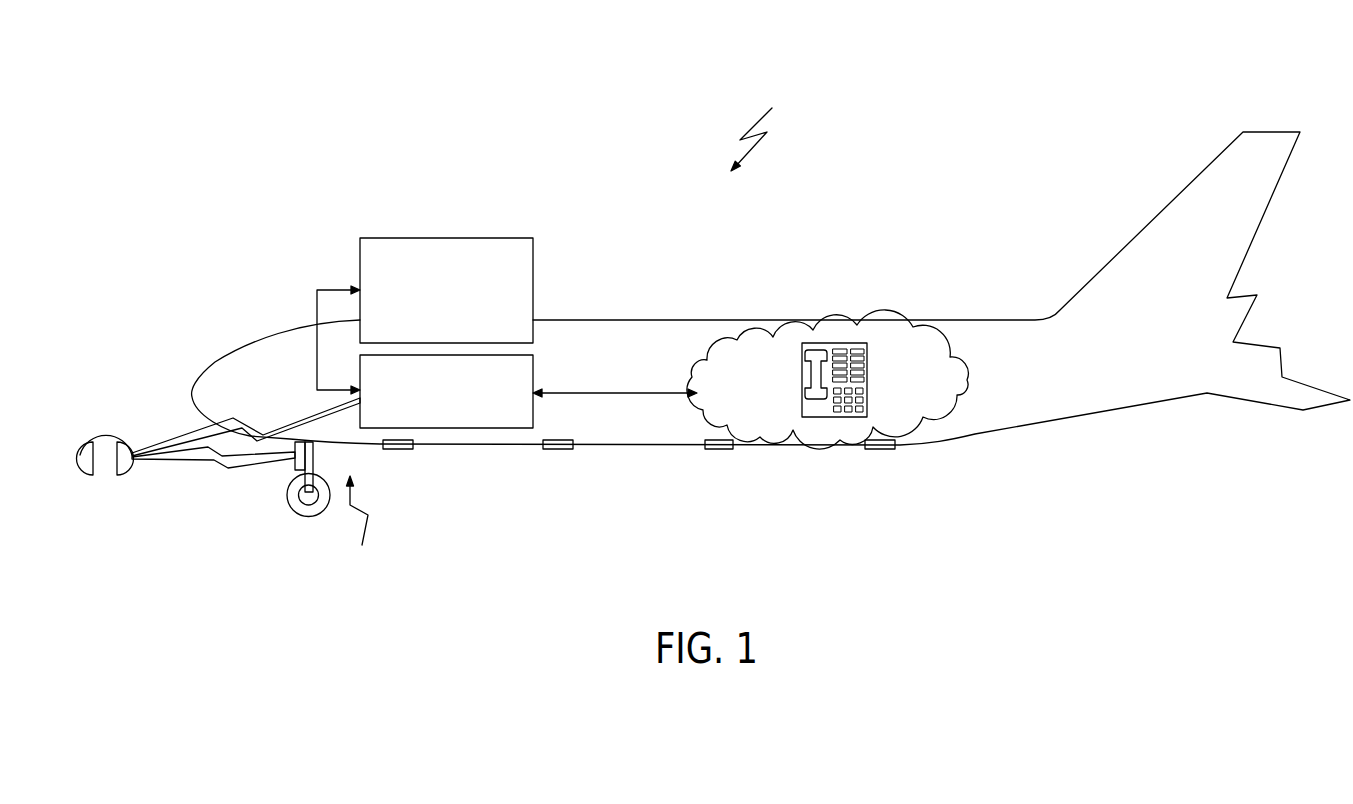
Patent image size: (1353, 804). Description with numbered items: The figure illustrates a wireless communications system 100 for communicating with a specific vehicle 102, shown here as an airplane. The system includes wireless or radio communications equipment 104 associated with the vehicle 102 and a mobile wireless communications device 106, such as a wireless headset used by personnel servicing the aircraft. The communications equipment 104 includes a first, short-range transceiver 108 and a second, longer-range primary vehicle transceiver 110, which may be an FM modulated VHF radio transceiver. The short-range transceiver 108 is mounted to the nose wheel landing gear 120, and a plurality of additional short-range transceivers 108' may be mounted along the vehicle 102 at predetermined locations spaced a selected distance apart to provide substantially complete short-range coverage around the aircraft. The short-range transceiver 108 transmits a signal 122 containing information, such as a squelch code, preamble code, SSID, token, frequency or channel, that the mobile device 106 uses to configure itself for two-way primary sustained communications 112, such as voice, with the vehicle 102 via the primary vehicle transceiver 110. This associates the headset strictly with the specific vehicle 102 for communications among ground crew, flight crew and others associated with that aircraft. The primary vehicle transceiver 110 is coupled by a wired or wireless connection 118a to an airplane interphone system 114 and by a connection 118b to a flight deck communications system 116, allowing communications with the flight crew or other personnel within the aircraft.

The wireless communications system 100 is at (767, 127).
The vehicle 102 is at (783, 320).
The communications equipment 104 is at (363, 529).
The mobile wireless communications device 106 is at (105, 423).
The short-range transceiver 108 is at (263, 472).
The short-range transceivers 108' is at (647, 472).
The primary vehicle transceiver 110 is at (535, 362).
The primary sustained communications 112 is at (180, 442).
The airplane interphone system 114 is at (960, 355).
The flight deck communications system 116 is at (448, 238).
The connection 118a is at (603, 395).
The connection 118b is at (317, 305).
The nose wheel landing gear 120 is at (307, 516).
The signal 122 is at (175, 467).